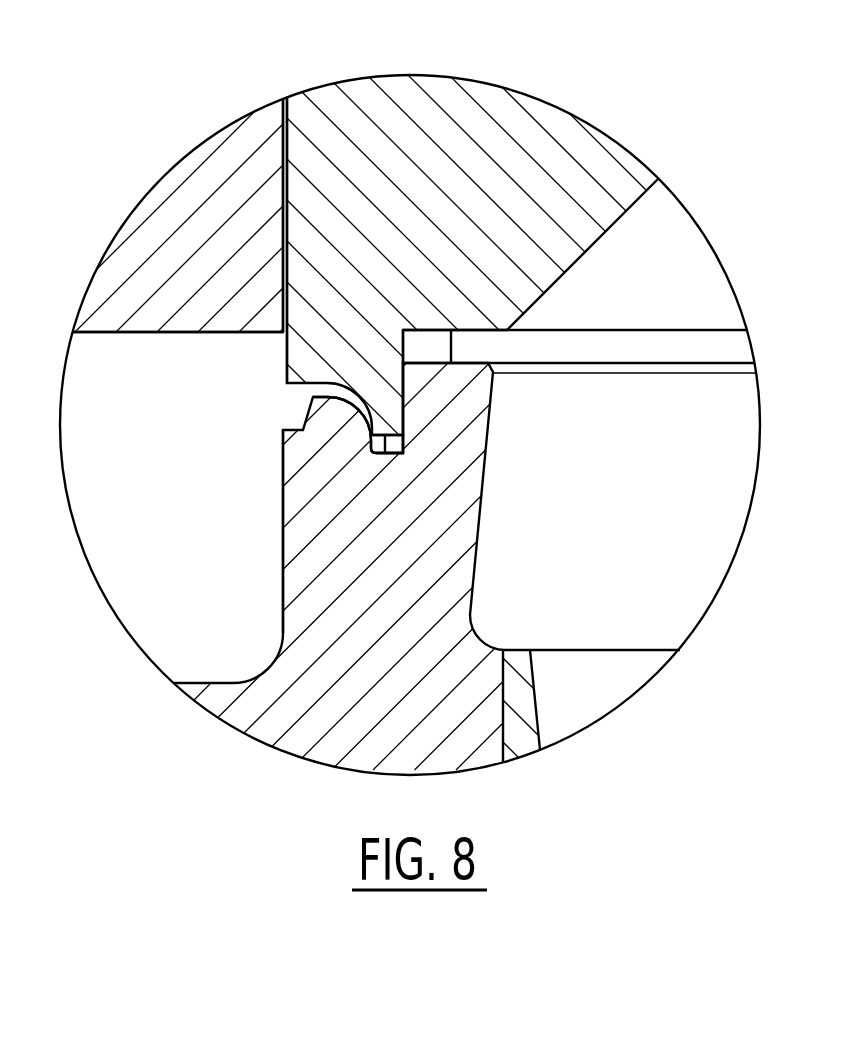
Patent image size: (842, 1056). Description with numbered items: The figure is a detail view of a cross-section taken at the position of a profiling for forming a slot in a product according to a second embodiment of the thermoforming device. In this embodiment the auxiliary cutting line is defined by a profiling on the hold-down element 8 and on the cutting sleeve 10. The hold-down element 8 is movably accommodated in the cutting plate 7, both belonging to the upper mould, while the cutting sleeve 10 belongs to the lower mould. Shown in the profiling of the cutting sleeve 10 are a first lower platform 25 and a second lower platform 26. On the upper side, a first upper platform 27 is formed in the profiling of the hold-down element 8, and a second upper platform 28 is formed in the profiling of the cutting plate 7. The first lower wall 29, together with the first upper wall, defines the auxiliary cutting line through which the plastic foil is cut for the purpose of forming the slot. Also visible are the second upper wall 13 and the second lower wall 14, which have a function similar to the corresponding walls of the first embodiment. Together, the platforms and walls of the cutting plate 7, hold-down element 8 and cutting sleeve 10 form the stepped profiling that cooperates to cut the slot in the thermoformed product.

The cutting plate 7 is at (215, 168).
The hold-down element 8 is at (540, 140).
The cutting sleeve 10 is at (283, 728).
The second upper wall 13 is at (286, 300).
The second lower wall 14 is at (283, 505).
The first lower platform 25 is at (432, 362).
The second lower platform 26 is at (380, 455).
The first upper platform 27 is at (383, 457).
The second upper platform 28 is at (190, 327).
The first lower wall 29 is at (407, 423).